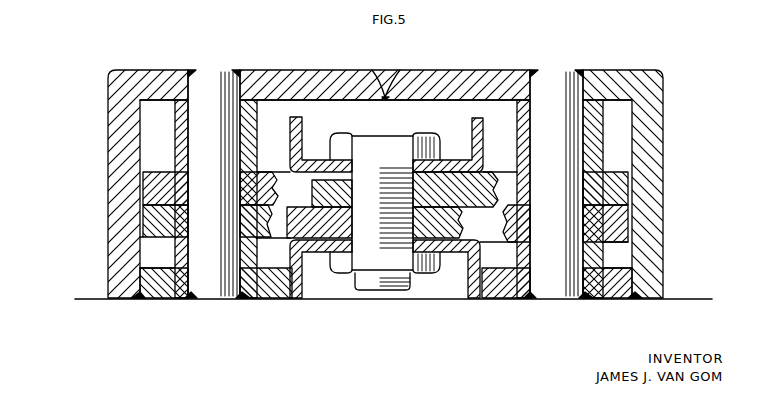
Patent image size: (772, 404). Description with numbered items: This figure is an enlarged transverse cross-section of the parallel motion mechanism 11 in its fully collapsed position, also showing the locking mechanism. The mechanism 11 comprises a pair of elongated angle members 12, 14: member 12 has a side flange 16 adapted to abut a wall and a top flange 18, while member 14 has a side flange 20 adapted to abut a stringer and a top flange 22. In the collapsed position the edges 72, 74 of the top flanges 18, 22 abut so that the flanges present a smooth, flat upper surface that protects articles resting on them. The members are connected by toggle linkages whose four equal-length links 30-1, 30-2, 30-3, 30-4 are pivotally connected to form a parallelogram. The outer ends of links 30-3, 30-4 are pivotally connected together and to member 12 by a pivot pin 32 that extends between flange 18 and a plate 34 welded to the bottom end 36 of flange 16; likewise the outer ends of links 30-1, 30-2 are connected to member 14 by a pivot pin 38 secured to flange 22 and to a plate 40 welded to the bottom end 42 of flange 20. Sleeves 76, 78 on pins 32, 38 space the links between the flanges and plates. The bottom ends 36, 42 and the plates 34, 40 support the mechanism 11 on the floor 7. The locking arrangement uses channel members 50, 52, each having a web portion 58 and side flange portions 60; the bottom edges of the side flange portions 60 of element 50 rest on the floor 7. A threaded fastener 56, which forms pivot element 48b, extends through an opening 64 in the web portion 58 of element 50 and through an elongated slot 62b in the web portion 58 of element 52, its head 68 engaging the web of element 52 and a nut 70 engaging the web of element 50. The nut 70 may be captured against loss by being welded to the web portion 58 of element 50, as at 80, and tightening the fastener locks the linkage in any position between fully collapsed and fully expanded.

The floor 7 is at (690, 299).
The parallel motion mechanism 11 is at (452, 67).
The elongated angle member 12 is at (374, 165).
The elongated angle member 14 is at (122, 62).
The side flange 16 is at (650, 124).
The top flange 18 is at (616, 85).
The side flange 20 is at (122, 114).
The top flange 22 is at (365, 165).
The link 30-1 is at (150, 180).
The link 30-2 is at (160, 218).
The link 30-3 is at (620, 220).
The link 30-4 is at (499, 171).
The pivot pin 32 is at (564, 139).
The plate 34 is at (608, 301).
The bottom end 36 is at (645, 288).
The pivot pin 38 is at (215, 154).
The plate 40 is at (163, 301).
The bottom end 42 is at (122, 279).
The pivot element 48b is at (385, 251).
The channel member 50 is at (452, 298).
The channel member 52 is at (485, 148).
The threaded fastener 56 is at (378, 195).
The web portion 58 is at (452, 160).
The side flange portion 60 is at (302, 133).
The elongated slot 62b is at (358, 178).
The opening 64 is at (386, 300).
The head 68 is at (387, 143).
The nut 70 is at (385, 295).
The edge 72 is at (385, 97).
The edge 74 is at (385, 97).
The sleeve 76 is at (522, 301).
The sleeve 78 is at (592, 130).
The weld 80 is at (316, 298).